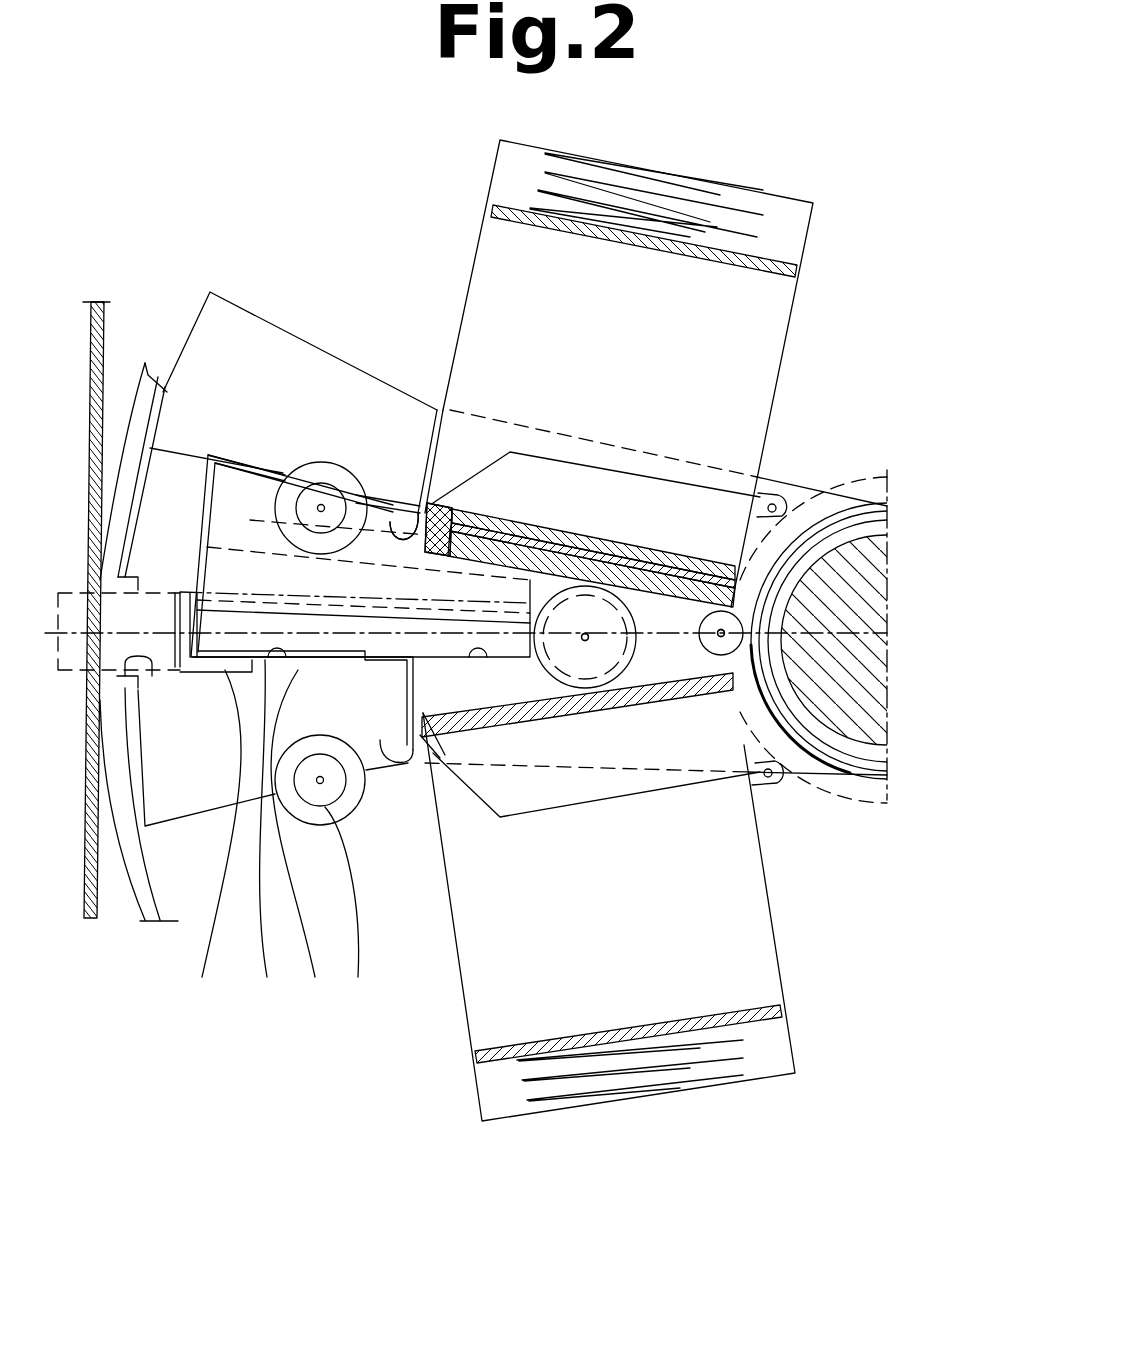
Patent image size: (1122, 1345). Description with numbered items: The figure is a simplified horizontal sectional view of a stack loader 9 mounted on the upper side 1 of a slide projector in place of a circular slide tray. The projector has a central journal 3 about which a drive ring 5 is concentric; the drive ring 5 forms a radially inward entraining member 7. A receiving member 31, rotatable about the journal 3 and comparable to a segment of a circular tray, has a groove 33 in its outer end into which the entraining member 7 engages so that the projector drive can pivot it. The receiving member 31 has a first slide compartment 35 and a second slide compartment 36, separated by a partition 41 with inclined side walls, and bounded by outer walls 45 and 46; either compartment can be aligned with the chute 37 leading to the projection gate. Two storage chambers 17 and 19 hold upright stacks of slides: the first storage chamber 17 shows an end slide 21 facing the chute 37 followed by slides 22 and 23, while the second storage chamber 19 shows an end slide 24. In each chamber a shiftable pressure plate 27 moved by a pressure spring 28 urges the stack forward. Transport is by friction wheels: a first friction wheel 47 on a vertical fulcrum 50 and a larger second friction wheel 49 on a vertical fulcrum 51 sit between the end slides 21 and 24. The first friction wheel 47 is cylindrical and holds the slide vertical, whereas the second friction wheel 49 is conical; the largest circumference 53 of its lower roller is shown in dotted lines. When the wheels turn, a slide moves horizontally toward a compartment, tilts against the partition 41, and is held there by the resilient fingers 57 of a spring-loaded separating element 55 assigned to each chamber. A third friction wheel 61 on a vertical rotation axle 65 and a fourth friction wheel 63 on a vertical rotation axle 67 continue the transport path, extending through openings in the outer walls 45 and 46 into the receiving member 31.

The upper side 1 is at (105, 320).
The central journal 3 is at (800, 530).
The drive ring 5 is at (150, 902).
The entraining member 7 is at (143, 680).
The stack loader 9 is at (405, 368).
The first storage chamber 17 is at (768, 375).
The second storage chamber 19 is at (762, 877).
The end slide 21 is at (443, 533).
The slide 22 is at (510, 522).
The slide 23 is at (604, 545).
The end slide 24 is at (470, 733).
The pressure plate 27 is at (800, 254).
The pressure spring 28 is at (712, 227).
The receiving member 31 is at (240, 347).
The groove 33 is at (133, 746).
The first slide compartment 35 is at (237, 474).
The second slide compartment 36 is at (262, 837).
The chute 37 is at (180, 600).
The partition 41 is at (253, 527).
The outer wall 45 is at (373, 495).
The outer wall 46 is at (303, 842).
The first friction wheel 47 is at (708, 657).
The second friction wheel 49 is at (590, 658).
The vertical fulcrum 50 is at (721, 632).
The vertical fulcrum 51 is at (587, 636).
The largest circumference of lower friction roller 53 is at (570, 665).
The separating element 55 is at (668, 492).
The resilient fingers 57 is at (392, 515).
The third friction wheel 61 is at (317, 462).
The fourth friction wheel 63 is at (354, 910).
The vertical rotation axle 65 is at (318, 508).
The vertical rotation axle 67 is at (322, 778).